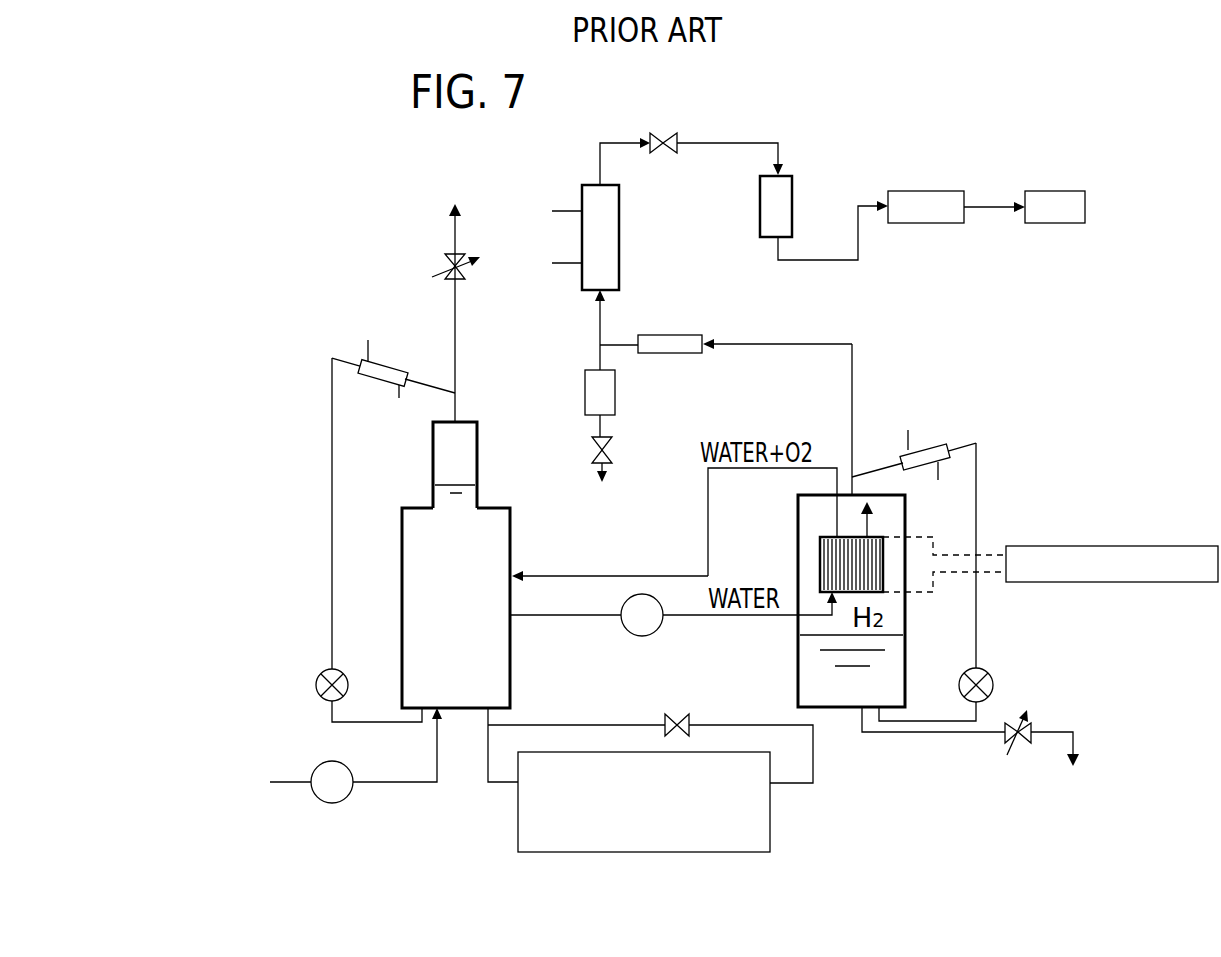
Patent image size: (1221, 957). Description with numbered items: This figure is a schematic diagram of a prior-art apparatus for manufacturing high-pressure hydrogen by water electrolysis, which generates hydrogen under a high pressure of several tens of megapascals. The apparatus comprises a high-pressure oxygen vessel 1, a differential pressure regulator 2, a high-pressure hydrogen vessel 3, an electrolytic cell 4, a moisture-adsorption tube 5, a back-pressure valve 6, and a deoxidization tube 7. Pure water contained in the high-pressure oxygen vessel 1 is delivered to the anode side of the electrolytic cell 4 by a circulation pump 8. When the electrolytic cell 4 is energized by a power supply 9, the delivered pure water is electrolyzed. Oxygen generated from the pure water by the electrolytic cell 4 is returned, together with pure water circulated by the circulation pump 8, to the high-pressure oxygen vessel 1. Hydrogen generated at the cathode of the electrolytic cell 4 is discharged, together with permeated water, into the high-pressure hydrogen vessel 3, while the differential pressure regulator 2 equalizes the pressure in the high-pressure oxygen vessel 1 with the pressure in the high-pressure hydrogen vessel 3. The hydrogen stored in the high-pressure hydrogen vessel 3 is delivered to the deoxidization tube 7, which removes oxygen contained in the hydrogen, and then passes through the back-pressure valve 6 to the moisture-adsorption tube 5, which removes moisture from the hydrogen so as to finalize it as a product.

The high-pressure oxygen vessel 1 is at (512, 538).
The differential pressure regulator 2 is at (757, 855).
The high-pressure hydrogen vessel 3 is at (843, 709).
The electrolytic cell 4 is at (819, 566).
The moisture-adsorption tube 5 is at (794, 192).
The back-pressure valve 6 is at (659, 165).
The deoxidization tube 7 is at (667, 362).
The circulation pump 8 is at (645, 638).
The power supply 9 is at (1197, 546).